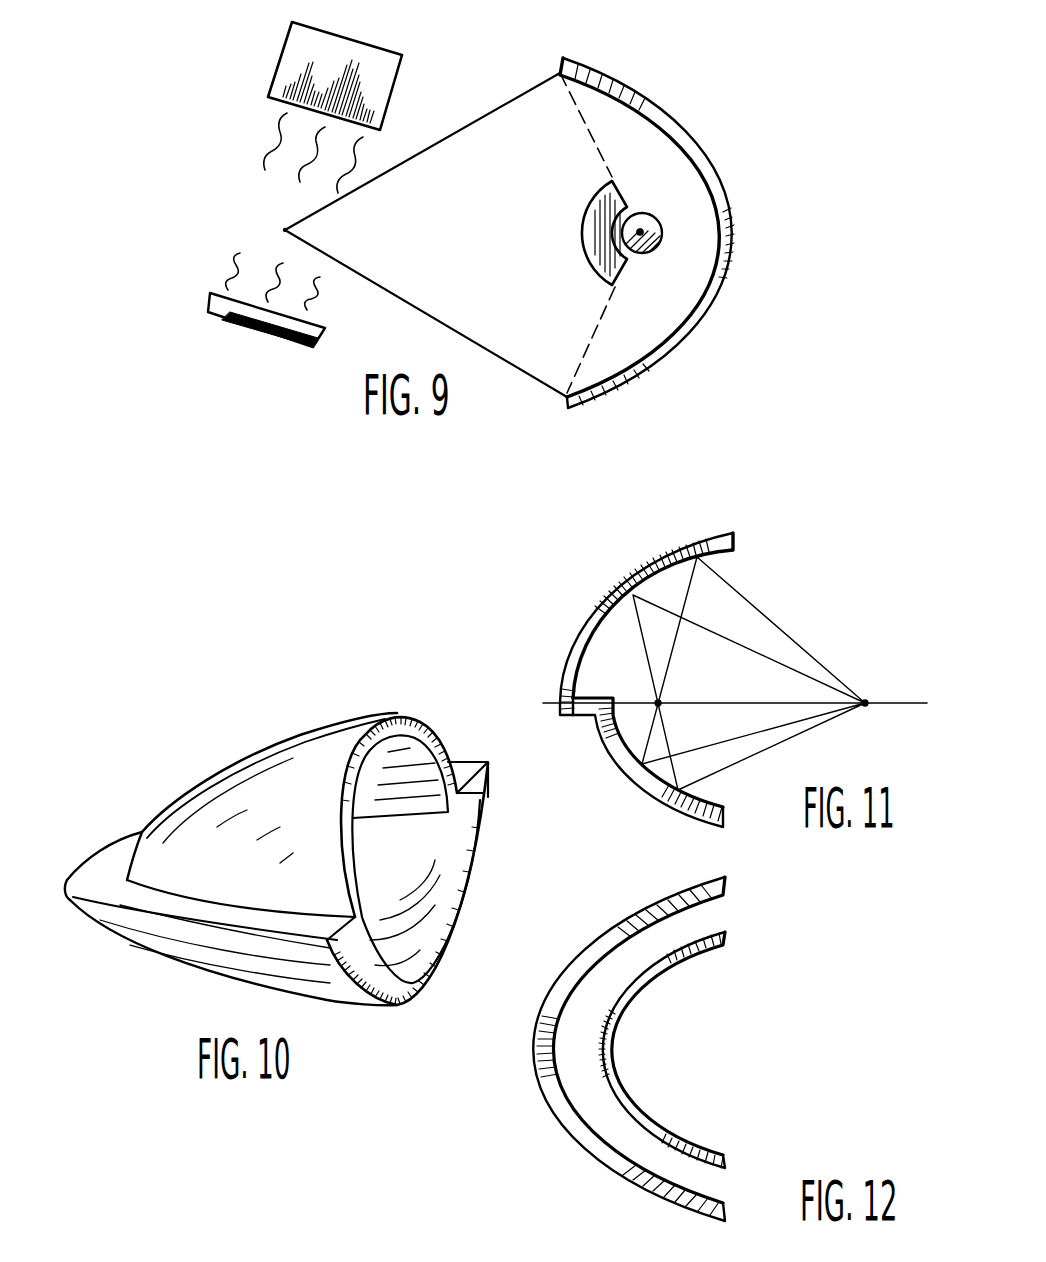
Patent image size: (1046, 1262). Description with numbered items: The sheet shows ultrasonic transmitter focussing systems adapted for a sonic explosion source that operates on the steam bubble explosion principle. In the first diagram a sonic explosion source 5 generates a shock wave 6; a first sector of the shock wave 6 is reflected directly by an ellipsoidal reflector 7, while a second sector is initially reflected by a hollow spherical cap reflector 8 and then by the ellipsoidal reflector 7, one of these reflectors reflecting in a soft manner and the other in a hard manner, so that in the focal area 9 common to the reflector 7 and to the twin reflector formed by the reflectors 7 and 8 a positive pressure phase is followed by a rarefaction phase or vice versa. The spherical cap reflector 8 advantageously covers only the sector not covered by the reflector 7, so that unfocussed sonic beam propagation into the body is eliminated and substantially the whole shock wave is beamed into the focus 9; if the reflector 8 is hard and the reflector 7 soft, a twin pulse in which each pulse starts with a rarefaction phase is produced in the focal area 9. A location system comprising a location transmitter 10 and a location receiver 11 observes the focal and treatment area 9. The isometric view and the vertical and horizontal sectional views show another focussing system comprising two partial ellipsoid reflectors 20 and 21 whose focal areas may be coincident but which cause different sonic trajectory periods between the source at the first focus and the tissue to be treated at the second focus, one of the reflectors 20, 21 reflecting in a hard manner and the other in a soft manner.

In FIG. 9, the sonic explosion source 5 is at (654, 241).
In FIG. 9, the shock wave 6 is at (661, 206).
In FIG. 9, the ellipsoidal reflector 7 is at (647, 233).
In FIG. 9, the hollow spherical cap reflector 8 is at (587, 233).
In FIG. 9, the focal area 9 is at (272, 231).
In FIG. 9, the location transmitter 10 is at (346, 98).
In FIG. 9, the location receiver 11 is at (266, 312).
In FIG. 10, the partial ellipsoid reflector 20 is at (292, 803).
In FIG. 11, the partial ellipsoid reflector 20 is at (672, 762).
In FIG. 12, the partial ellipsoid reflector 20 is at (662, 1050).
In FIG. 10, the partial ellipsoid reflector 21 is at (276, 899).
In FIG. 11, the partial ellipsoid reflector 21 is at (671, 624).
In FIG. 12, the partial ellipsoid reflector 21 is at (652, 1048).